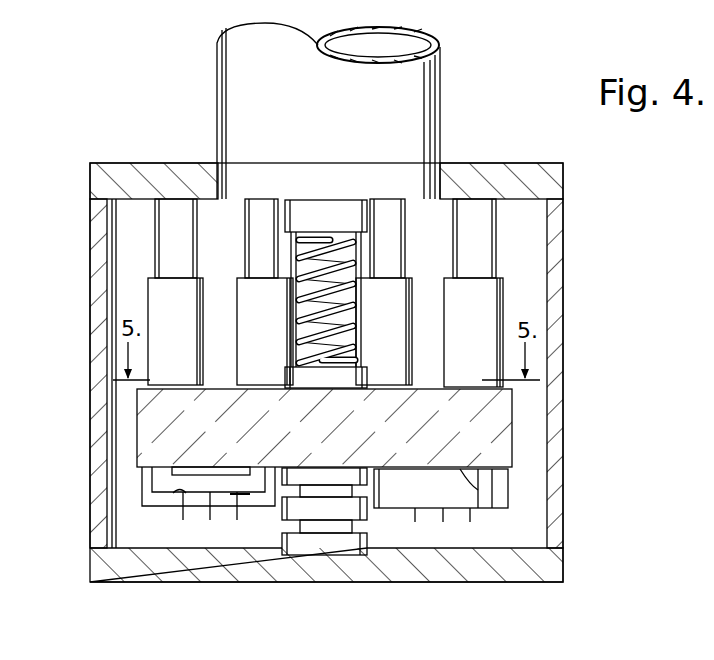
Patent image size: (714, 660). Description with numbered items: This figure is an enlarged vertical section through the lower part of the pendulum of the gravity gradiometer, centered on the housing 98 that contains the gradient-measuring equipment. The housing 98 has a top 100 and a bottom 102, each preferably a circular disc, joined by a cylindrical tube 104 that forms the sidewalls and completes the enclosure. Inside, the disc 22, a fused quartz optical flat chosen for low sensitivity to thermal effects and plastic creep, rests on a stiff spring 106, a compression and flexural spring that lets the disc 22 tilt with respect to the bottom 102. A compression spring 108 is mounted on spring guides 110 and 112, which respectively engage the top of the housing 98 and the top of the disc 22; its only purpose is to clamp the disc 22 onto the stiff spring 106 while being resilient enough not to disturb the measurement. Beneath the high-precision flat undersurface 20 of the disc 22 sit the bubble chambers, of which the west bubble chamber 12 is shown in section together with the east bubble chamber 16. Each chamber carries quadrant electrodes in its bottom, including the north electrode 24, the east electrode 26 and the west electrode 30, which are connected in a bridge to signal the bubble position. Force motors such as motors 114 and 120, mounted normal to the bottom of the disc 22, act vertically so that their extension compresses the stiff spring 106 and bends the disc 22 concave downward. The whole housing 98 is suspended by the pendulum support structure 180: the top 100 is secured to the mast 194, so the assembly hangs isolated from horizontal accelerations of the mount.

The housing 98 is at (567, 208).
The top 100 is at (120, 163).
The bottom 102 is at (195, 582).
The cylindrical tube 104 is at (90, 250).
The stiff spring 106 is at (338, 552).
The compression spring 108 is at (356, 272).
The spring guide 110 is at (360, 218).
The spring guide 112 is at (362, 368).
The force motor 114 is at (185, 251).
The force motor 120 is at (497, 258).
The support structure 180 is at (215, 100).
The mast 194 is at (430, 44).
The disc 22 is at (512, 423).
The flat undersurface 20 is at (510, 492).
The bubble chamber 16 is at (488, 508).
The bubble chamber 12 is at (140, 486).
The electrode 30 is at (176, 496).
The electrode 24 is at (210, 521).
The electrode 26 is at (245, 497).